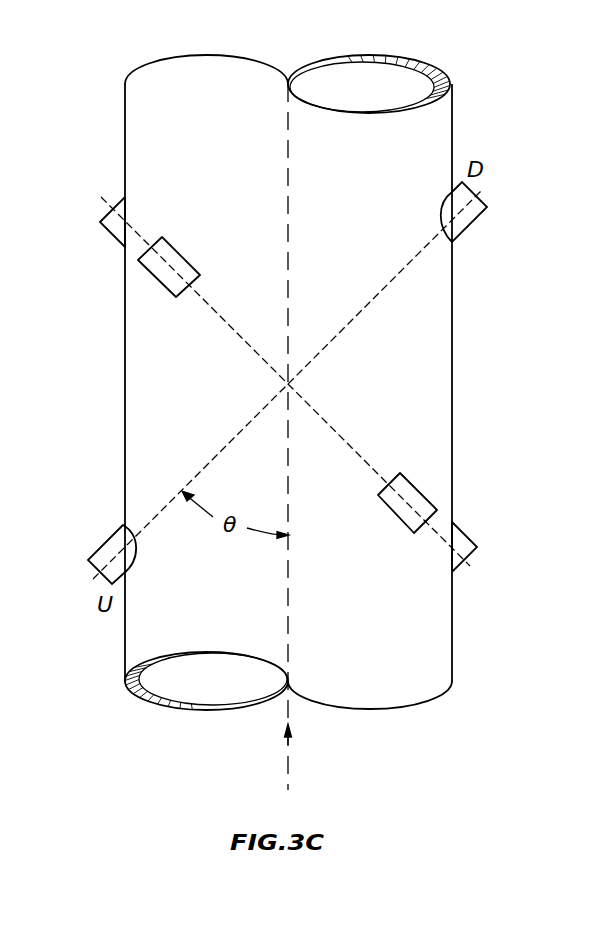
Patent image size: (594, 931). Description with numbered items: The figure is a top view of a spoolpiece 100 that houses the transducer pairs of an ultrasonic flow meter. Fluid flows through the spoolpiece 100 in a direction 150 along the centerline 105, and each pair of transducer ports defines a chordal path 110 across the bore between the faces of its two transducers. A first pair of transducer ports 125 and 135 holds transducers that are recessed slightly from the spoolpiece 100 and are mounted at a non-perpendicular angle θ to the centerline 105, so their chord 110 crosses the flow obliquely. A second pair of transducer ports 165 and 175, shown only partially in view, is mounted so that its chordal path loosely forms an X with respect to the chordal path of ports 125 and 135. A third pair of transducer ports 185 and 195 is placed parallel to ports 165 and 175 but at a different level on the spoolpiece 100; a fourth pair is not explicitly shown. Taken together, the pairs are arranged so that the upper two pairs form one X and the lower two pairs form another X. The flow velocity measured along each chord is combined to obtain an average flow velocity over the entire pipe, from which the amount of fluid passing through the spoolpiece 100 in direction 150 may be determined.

The spoolpiece 100 is at (452, 100).
The centerline 105 is at (288, 150).
The path 110 is at (338, 333).
The transducer port 125 is at (474, 219).
The transducer port 135 is at (113, 533).
The flow direction 150 is at (288, 767).
The transducer port 165 is at (108, 231).
The transducer port 175 is at (467, 532).
The transducer port 185 is at (163, 238).
The transducer port 195 is at (393, 518).